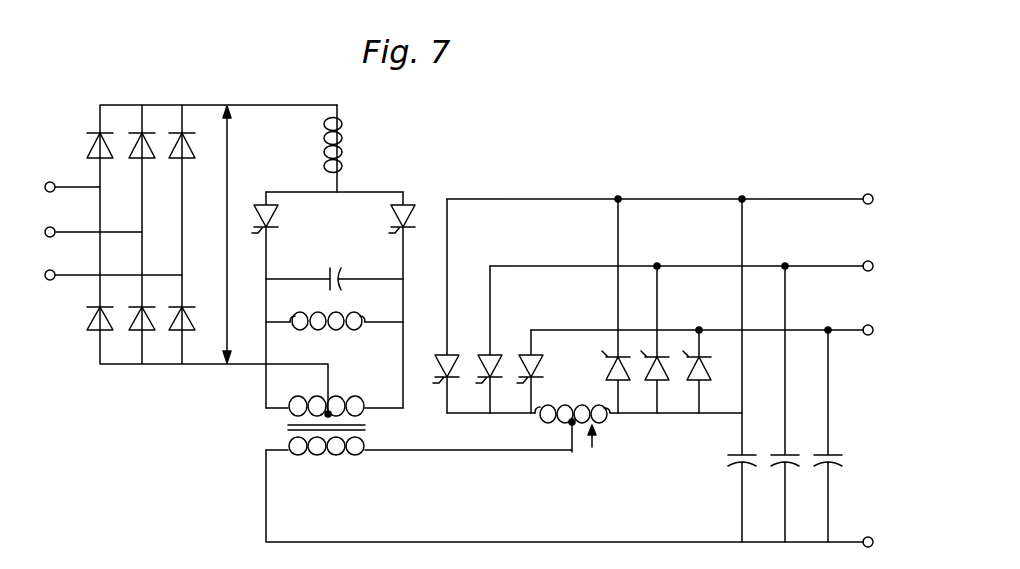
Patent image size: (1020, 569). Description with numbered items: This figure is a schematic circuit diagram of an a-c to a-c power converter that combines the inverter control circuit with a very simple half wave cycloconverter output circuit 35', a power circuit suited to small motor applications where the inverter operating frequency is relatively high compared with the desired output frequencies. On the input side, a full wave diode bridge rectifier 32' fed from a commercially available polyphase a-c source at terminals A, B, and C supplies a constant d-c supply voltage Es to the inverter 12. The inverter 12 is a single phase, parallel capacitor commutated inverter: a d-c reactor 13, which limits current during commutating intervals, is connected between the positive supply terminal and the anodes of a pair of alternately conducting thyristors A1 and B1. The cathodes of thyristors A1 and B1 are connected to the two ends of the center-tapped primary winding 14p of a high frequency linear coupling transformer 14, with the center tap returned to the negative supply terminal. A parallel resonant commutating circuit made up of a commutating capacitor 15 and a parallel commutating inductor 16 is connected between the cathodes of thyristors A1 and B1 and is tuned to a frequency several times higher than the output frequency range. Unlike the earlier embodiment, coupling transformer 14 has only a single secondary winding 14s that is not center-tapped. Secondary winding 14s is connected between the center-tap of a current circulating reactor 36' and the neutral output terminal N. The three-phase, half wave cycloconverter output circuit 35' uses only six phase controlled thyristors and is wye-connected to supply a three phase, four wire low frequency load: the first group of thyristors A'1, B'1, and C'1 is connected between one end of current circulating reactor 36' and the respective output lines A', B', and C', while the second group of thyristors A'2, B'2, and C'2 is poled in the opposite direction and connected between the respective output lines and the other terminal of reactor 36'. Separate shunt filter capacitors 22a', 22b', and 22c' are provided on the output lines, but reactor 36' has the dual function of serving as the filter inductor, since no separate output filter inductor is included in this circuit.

The inverter 12 is at (340, 192).
The d-c reactor 13 is at (345, 153).
The high frequency linear coupling transformer 14 is at (368, 429).
The primary winding 14p is at (337, 399).
The secondary winding 14s is at (342, 456).
The commutating capacitor 15 is at (338, 276).
The commutating inductor 16 is at (343, 315).
The full wave diode bridge rectifier 32' is at (141, 231).
The half wave cycloconverter output circuit 35' is at (610, 443).
The current circulating reactor 36' is at (559, 428).
The shunt filter capacitor 22a' is at (718, 369).
The shunt filter capacitor 22b' is at (797, 402).
The shunt filter capacitor 22c' is at (844, 434).
The thyristor A1 is at (283, 300).
The thyristor B1 is at (387, 300).
The thyristor A'1 is at (432, 306).
The thyristor B'1 is at (503, 339).
The thyristor C'1 is at (549, 371).
The thyristor A'2 is at (624, 304).
The thyristor B'2 is at (665, 338).
The thyristor C'2 is at (707, 370).
The input terminal phase A is at (71, 170).
The input terminal phase B is at (90, 216).
The input terminal phase C is at (108, 259).
The output line A' is at (660, 184).
The output line B' is at (681, 251).
The output line C' is at (702, 315).
The neutral output terminal N is at (844, 540).
The supply voltage Es is at (222, 234).